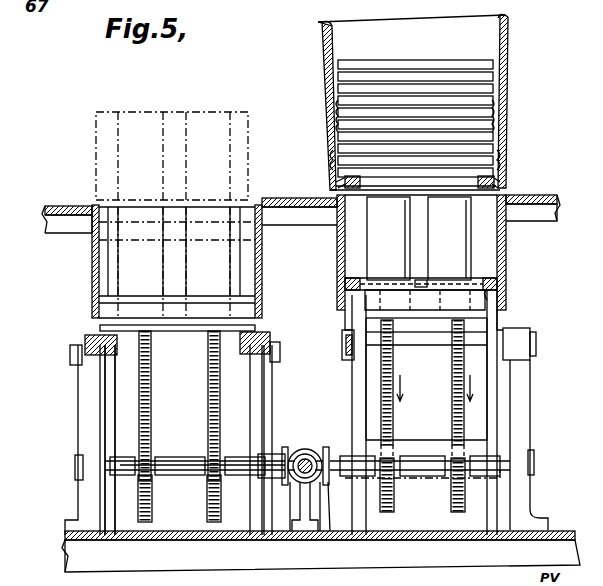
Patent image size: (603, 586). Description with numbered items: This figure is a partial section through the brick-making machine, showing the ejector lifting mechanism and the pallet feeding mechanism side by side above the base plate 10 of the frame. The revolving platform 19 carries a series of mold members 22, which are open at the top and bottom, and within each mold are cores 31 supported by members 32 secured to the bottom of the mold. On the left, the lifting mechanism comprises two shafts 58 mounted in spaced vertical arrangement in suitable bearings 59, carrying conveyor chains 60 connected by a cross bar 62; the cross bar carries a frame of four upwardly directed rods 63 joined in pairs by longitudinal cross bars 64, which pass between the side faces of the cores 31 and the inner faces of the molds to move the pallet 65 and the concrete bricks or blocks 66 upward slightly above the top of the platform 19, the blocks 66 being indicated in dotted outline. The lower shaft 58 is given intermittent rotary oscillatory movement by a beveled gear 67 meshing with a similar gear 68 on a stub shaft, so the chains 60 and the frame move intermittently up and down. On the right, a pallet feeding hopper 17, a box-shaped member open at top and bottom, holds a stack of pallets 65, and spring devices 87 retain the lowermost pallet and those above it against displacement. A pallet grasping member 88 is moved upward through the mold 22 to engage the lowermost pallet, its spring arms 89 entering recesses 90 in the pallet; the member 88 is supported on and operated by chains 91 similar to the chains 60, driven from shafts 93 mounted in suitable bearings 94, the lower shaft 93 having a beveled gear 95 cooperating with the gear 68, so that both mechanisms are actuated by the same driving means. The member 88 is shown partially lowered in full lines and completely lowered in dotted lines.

The base plate 10 is at (65, 545).
The pallet feeding hopper 17 is at (506, 50).
The revolving platform 19 is at (50, 208).
The mold member 22 is at (92, 250).
The core 31 is at (285, 257).
The core supporting member 32 is at (92, 310).
The shaft 58 is at (188, 470).
The bearing 59 is at (80, 442).
The conveyor chain 60 is at (210, 500).
The cross bar 62 is at (108, 396).
The upwardly directed rod 63 is at (215, 472).
The longitudinal cross bar 64 is at (100, 328).
The pallet 65 is at (345, 97).
The concrete brick or block 66 is at (96, 141).
The beveled gear 67 is at (290, 448).
The beveled gear 68 is at (295, 482).
The spring device 87 is at (335, 176).
The pallet grasping member 88 is at (497, 392).
The spring arm 89 is at (345, 300).
The recess 90 is at (335, 186).
The chain 91 is at (455, 500).
The shaft 93 is at (440, 440).
The bearing 94 is at (350, 355).
The beveled gear 95 is at (328, 485).